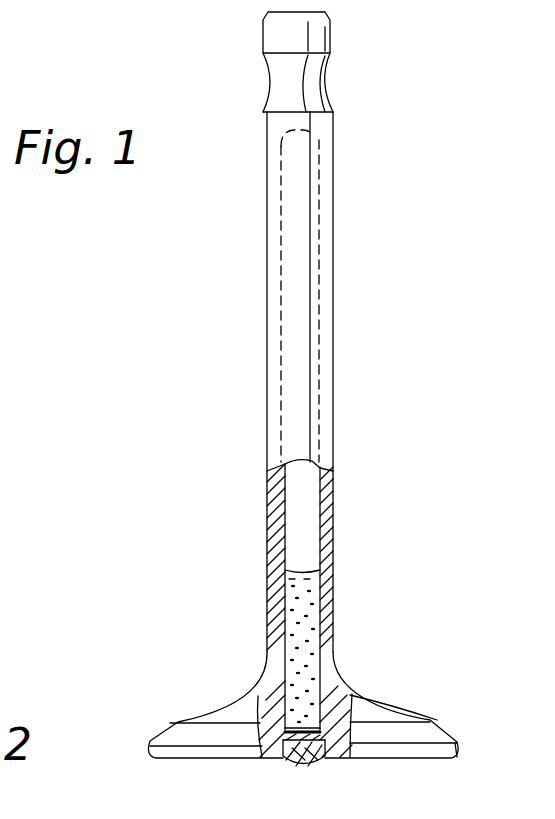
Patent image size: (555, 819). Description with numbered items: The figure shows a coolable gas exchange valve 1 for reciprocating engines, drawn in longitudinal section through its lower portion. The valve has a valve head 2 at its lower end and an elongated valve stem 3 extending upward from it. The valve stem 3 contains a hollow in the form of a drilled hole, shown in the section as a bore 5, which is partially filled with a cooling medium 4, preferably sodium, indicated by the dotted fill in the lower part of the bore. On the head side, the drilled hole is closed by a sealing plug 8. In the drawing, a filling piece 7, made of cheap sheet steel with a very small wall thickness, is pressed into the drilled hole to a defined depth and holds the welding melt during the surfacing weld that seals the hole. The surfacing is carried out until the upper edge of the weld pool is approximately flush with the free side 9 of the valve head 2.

The valve 1 is at (320, 414).
The valve head 2 is at (432, 720).
The valve stem 3 is at (331, 352).
The cooling medium 4 is at (314, 594).
The hollow cavity 5 is at (298, 513).
The filling piece 7 is at (281, 760).
The sealing plug 8 is at (319, 766).
The free side of the head 9 is at (418, 759).